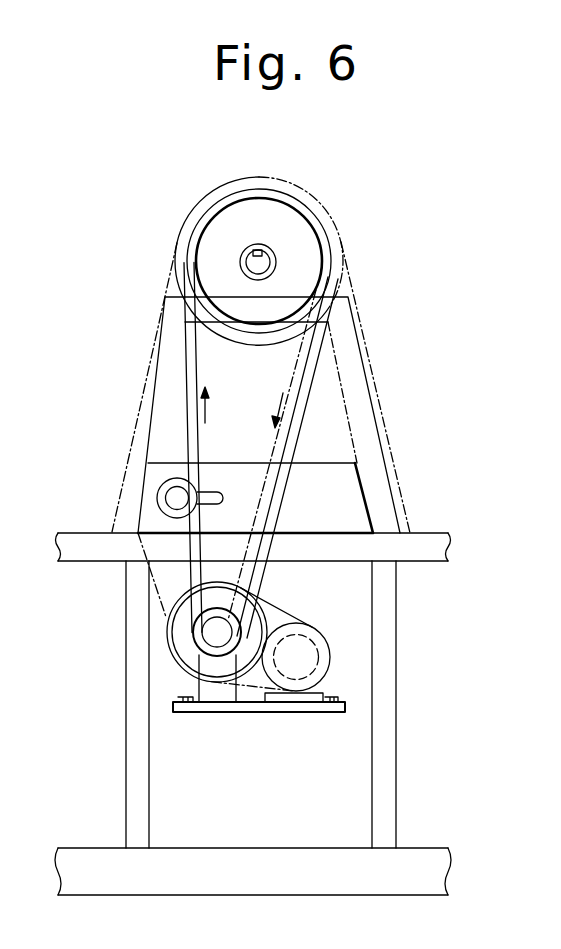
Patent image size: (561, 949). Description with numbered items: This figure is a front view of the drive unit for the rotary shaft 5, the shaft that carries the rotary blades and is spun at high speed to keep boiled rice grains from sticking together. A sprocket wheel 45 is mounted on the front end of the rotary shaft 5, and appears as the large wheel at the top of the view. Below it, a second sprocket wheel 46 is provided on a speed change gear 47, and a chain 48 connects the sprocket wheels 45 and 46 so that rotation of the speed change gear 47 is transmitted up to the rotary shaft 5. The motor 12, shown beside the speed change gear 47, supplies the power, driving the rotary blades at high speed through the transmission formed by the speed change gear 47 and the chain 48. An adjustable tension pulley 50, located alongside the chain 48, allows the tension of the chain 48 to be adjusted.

The sprocket wheel 45 is at (190, 249).
The rotary shaft 5 is at (263, 266).
The adjustable tension pulley 50 is at (160, 498).
The chain 48 is at (278, 495).
The speed change gear 47 is at (168, 617).
The sprocket wheel 46 is at (220, 653).
The motor 12 is at (308, 630).